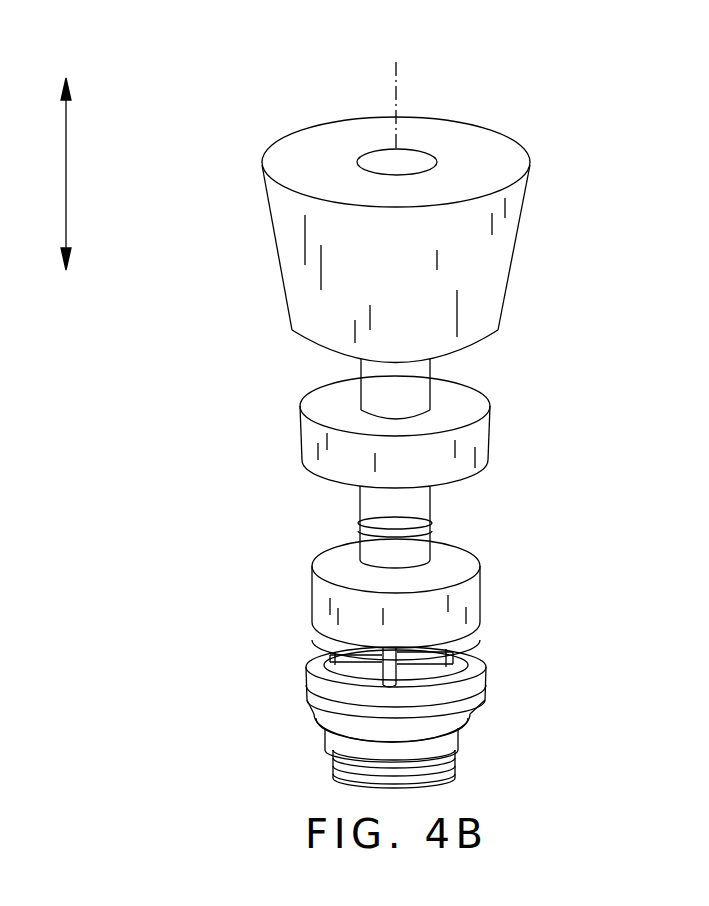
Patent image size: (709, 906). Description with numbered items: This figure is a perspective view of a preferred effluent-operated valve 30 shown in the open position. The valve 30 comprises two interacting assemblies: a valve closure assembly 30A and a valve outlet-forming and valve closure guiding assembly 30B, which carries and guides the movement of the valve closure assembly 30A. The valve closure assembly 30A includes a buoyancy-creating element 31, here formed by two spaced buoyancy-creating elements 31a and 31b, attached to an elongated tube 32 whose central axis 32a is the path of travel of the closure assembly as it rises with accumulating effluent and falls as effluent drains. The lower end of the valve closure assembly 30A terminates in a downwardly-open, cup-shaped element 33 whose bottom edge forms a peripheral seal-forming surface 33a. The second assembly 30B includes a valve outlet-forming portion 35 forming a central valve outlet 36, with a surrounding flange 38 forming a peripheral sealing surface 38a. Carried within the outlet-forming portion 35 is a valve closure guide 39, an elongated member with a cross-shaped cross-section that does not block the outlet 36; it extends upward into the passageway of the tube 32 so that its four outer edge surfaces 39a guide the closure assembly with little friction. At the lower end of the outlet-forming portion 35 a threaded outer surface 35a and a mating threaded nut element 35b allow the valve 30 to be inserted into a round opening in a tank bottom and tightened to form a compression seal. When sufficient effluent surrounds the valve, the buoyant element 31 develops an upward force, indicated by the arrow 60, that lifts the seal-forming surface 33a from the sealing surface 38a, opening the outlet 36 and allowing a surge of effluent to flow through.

The effluent-operated valve 30 is at (603, 165).
The valve closure assembly 30A is at (180, 419).
The valve outlet-forming and valve closure guiding assembly 30B is at (185, 649).
The buoyancy-creating element 31 is at (245, 163).
The buoyancy-creating element 31a is at (490, 262).
The buoyancy-creating element 31b is at (487, 432).
The elongated tube 32 is at (405, 507).
The central axis 32a is at (397, 112).
The cup-shaped element 33 is at (470, 598).
The peripheral seal-forming surface 33a is at (480, 648).
The valve outlet-forming portion 35 is at (487, 750).
The threaded outer surface 35a is at (450, 775).
The mating threaded nut element 35b is at (335, 740).
The central valve outlet 36 is at (376, 682).
The surrounding flange 38 is at (467, 690).
The peripheral sealing surface 38a is at (460, 702).
The valve closure guide 39 is at (340, 710).
The outer edge surfaces 39a is at (322, 664).
The arrow 60 is at (66, 177).